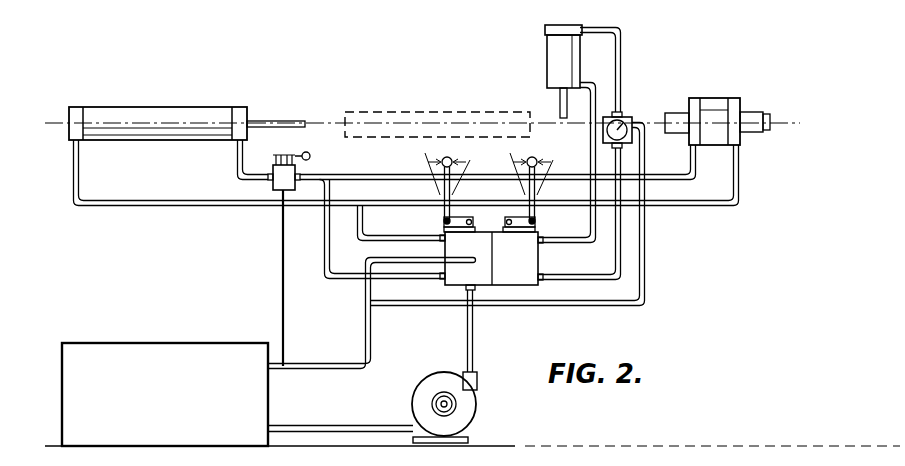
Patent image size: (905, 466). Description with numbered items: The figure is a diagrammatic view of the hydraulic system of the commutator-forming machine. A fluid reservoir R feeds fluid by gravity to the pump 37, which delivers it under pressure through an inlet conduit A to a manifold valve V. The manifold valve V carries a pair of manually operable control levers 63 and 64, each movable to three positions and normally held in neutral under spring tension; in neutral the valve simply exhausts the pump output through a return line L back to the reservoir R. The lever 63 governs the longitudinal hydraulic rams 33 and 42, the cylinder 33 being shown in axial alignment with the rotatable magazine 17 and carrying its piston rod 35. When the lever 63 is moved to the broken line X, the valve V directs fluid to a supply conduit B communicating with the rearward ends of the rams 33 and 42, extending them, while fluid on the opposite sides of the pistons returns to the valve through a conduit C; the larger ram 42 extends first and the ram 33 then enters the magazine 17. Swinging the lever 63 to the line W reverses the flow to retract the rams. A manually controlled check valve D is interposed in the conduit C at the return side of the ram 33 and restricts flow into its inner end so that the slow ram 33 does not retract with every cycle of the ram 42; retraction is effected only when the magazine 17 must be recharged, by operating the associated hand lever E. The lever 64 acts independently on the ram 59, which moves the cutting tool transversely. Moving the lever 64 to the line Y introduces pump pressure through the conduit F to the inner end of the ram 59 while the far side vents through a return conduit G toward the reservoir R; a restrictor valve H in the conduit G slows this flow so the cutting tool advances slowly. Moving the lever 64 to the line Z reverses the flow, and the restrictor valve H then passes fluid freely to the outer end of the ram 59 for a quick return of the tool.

The hydraulic ram 33 is at (173, 107).
The piston rod 35 is at (277, 118).
The rotatable magazine 17 is at (450, 111).
The hydraulic ram 59 is at (552, 57).
The hydraulic ram 42 is at (722, 102).
The control lever 63 is at (455, 197).
The control lever 64 is at (540, 197).
The pump 37 is at (444, 407).
The return conduit G is at (622, 60).
The restrictor valve H is at (633, 117).
The conduit F is at (590, 150).
The manually controlled check valve D is at (284, 260).
The hand lever E is at (310, 156).
The conduit C is at (324, 238).
The supply conduit B is at (369, 221).
The return line L is at (372, 332).
The manifold valve V is at (491, 261).
The inlet conduit A is at (474, 333).
The fluid reservoir R is at (165, 394).
The lever position W is at (427, 169).
The lever position X is at (466, 169).
The lever position Y is at (516, 169).
The lever position Z is at (547, 169).